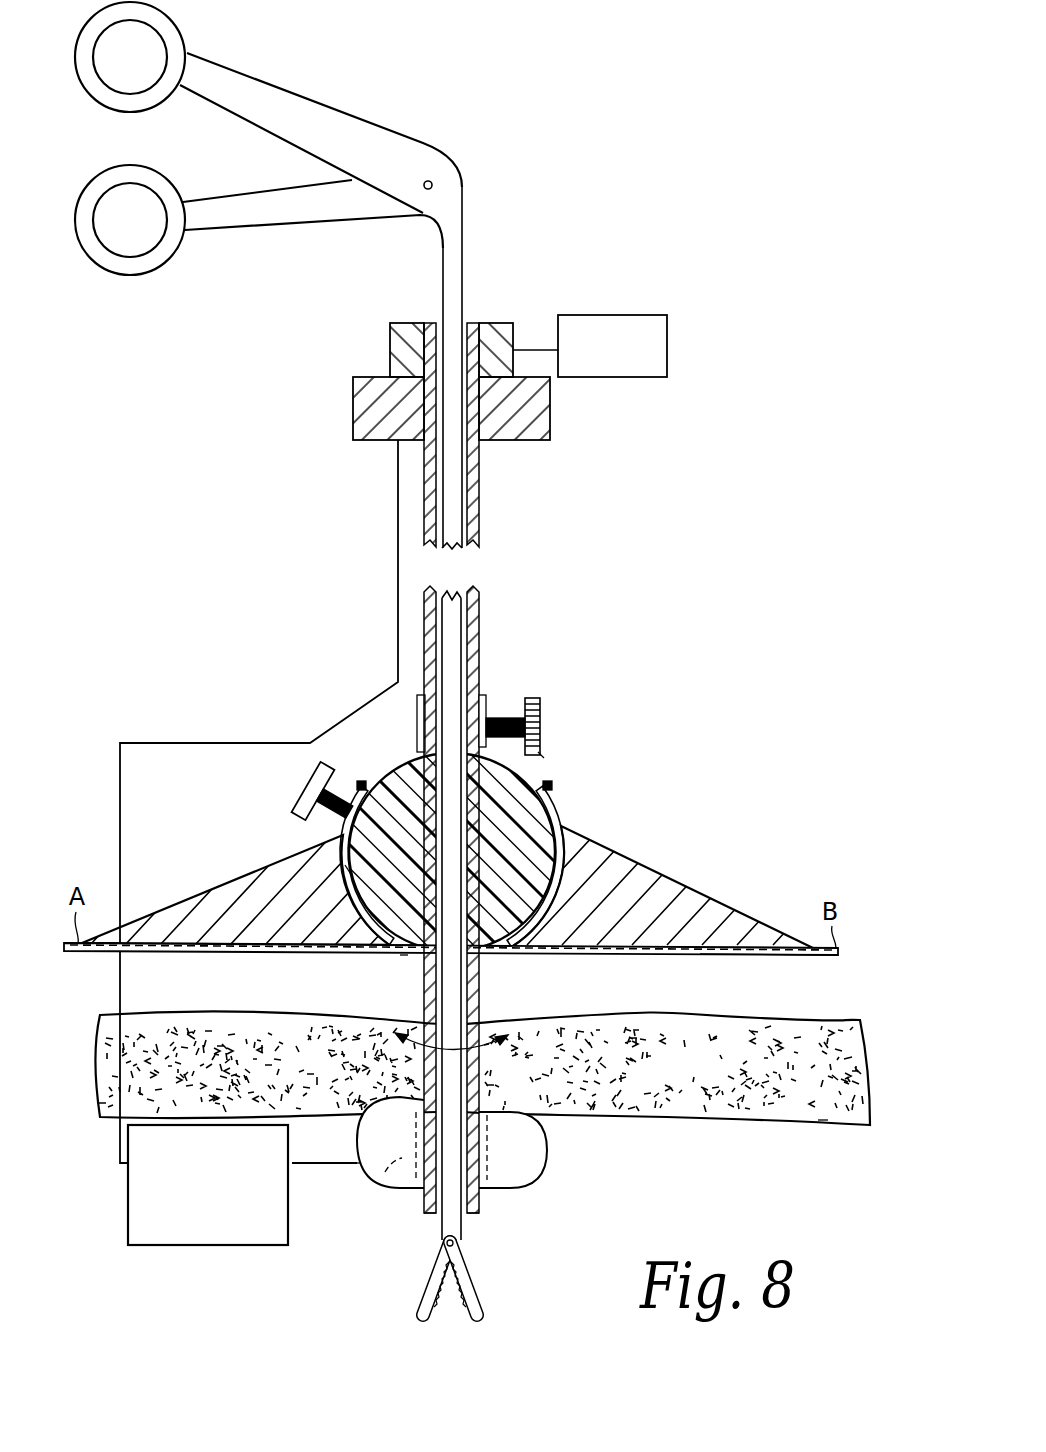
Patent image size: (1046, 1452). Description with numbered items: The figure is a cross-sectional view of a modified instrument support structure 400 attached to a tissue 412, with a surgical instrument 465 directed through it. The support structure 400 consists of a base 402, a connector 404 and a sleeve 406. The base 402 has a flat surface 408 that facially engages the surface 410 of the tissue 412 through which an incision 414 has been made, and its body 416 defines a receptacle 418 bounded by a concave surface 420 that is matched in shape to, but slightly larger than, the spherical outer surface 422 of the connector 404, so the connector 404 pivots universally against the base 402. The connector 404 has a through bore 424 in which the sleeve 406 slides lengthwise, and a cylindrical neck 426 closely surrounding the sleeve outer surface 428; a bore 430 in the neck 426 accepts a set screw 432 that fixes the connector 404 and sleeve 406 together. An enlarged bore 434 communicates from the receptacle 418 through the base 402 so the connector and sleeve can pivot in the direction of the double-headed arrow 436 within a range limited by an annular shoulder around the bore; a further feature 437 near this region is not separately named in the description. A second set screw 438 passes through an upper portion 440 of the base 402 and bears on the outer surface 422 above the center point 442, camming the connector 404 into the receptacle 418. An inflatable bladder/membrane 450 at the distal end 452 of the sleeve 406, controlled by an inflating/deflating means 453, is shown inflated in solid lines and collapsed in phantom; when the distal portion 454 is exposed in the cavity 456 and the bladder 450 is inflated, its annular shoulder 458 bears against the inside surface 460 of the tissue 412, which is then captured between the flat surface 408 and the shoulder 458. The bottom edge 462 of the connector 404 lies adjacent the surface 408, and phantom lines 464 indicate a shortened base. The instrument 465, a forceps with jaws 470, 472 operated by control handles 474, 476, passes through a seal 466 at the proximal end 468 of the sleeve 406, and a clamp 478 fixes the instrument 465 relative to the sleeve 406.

The instrument support structure 400 is at (503, 258).
The base 402 is at (625, 858).
The connector 404 is at (418, 752).
The sleeve 406 is at (479, 642).
The flat surface 408 is at (236, 954).
The tissue surface 410 is at (725, 1015).
The tissue 412 is at (482, 1068).
The incision 414 is at (384, 1097).
The body 416 is at (257, 875).
The receptacle 418 is at (368, 790).
The concave surface 420 is at (556, 812).
The spherical outer surface 422 is at (348, 870).
The through bore 424 is at (542, 755).
The cylindrical neck 426 is at (487, 700).
The sleeve outer surface 428 is at (478, 592).
The bore 430 is at (490, 722).
The set screw 432 is at (541, 700).
The enlarged bore 434 is at (403, 955).
The double-headed arrow 436 is at (490, 1045).
The cannula passage 437 is at (397, 954).
The set screw 438 is at (305, 788).
The upper portion 440 is at (340, 822).
The center point 442 is at (322, 905).
The inflatable bladder/membrane 450 is at (385, 1190).
The distal end 452 is at (479, 1210).
The inflating/deflating means 453 is at (208, 1185).
The distal portion 454 is at (436, 1215).
The cavity 456 is at (722, 1177).
The annular shoulder 458 is at (366, 1100).
The inside surface 460 is at (824, 1125).
The bottom edge 462 is at (505, 955).
The phantom lines 464 is at (195, 954).
The instrument 465 is at (463, 193).
The seal 466 is at (353, 400).
The proximal end 468 is at (490, 323).
The jaw 470 is at (420, 1318).
The jaw 472 is at (485, 1318).
The control handle 474 is at (232, 92).
The control handle 476 is at (215, 218).
The clamp 478 is at (590, 346).